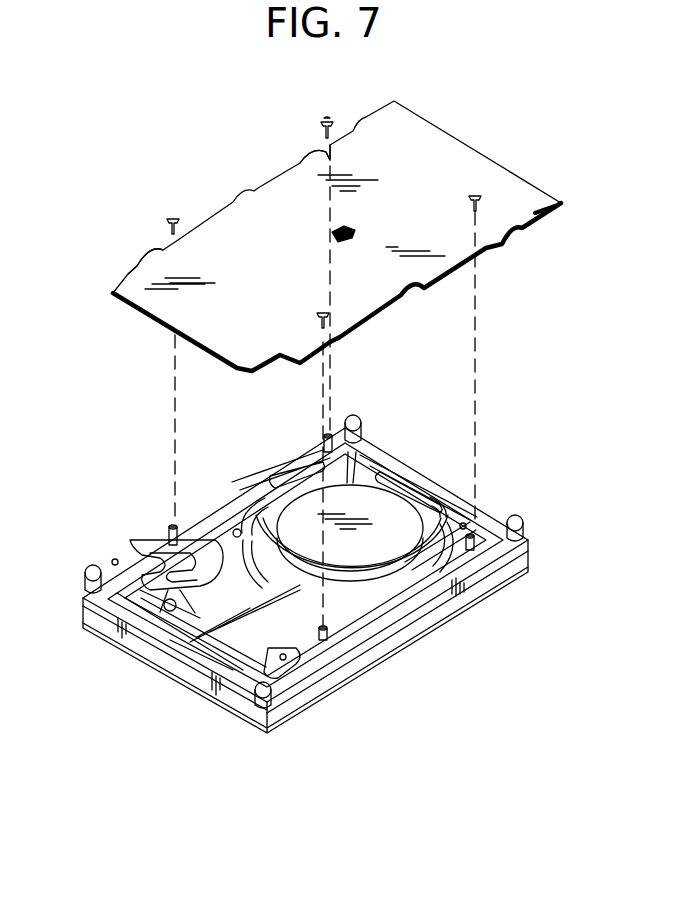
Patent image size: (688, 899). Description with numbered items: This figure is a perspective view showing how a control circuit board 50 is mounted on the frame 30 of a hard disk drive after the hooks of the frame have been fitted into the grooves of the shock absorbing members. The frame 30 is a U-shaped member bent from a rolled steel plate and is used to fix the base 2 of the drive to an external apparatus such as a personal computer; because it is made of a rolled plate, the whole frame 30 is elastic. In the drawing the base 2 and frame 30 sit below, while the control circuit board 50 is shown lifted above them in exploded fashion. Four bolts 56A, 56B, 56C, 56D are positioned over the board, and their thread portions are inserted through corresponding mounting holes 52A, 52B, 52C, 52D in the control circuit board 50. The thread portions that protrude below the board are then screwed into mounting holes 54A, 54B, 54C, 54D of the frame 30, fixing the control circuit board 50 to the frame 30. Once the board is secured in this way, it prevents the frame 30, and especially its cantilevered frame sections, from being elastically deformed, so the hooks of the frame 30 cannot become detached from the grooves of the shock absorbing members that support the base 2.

The base 2 is at (420, 627).
The frame 30 is at (450, 583).
The control circuit board 50 is at (300, 268).
The mounting hole 52A is at (300, 163).
The mounting hole 52B is at (478, 242).
The mounting hole 52C is at (133, 263).
The mounting hole 52D is at (323, 334).
The mounting hole 54A is at (327, 432).
The mounting hole 54B is at (470, 540).
The mounting hole 54C is at (172, 533).
The mounting hole 54D is at (320, 632).
The bolt 56A is at (326, 118).
The bolt 56B is at (474, 194).
The bolt 56C is at (172, 216).
The bolt 56D is at (322, 310).